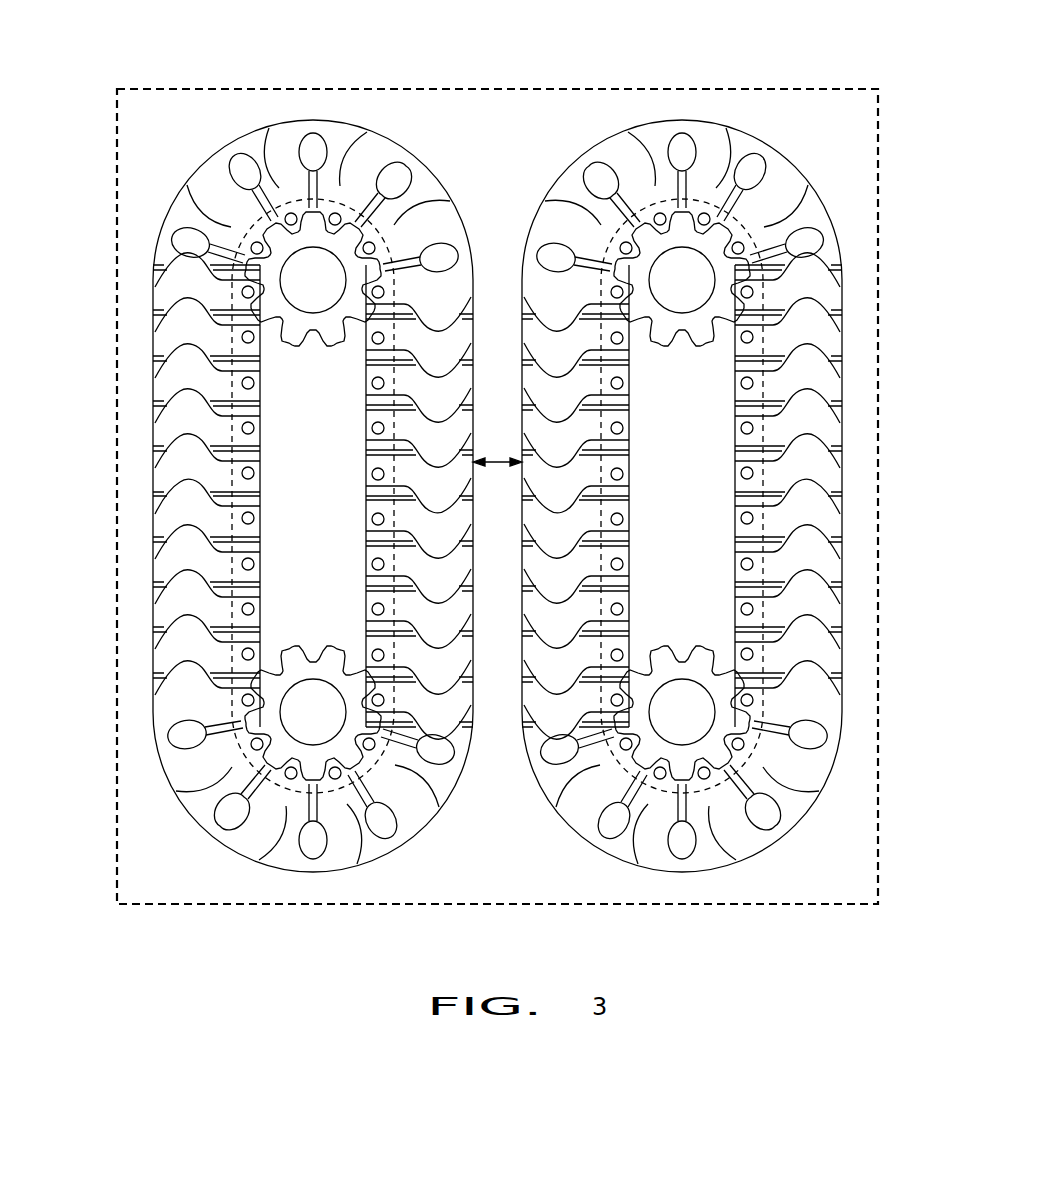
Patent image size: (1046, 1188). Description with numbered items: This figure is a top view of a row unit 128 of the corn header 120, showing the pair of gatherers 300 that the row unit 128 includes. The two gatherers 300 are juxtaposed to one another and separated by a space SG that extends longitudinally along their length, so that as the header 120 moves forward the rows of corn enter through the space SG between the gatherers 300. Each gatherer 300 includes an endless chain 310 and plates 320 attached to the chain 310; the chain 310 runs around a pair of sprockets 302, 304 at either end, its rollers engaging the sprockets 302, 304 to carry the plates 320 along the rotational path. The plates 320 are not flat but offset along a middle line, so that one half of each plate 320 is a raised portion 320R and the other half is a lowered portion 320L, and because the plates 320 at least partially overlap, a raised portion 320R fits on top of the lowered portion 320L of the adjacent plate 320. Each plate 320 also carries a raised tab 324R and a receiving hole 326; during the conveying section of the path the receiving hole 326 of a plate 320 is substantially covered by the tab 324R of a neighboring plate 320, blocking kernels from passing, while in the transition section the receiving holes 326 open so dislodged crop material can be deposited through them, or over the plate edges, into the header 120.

The header 120 is at (200, 88).
The row unit 128 is at (510, 150).
The gatherer 300 is at (506, 472).
The sprocket 302 is at (296, 345).
The sprocket 304 is at (298, 660).
The endless chain 310 is at (262, 567).
The plate 320 is at (172, 585).
The raised portion 320R is at (203, 782).
The lowered portion 320L is at (238, 837).
The raised tab 324R is at (363, 160).
The receiving hole 326 is at (317, 153).
The space SG is at (497, 470).